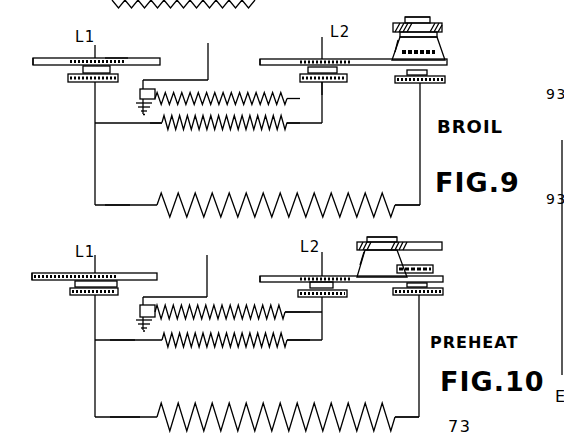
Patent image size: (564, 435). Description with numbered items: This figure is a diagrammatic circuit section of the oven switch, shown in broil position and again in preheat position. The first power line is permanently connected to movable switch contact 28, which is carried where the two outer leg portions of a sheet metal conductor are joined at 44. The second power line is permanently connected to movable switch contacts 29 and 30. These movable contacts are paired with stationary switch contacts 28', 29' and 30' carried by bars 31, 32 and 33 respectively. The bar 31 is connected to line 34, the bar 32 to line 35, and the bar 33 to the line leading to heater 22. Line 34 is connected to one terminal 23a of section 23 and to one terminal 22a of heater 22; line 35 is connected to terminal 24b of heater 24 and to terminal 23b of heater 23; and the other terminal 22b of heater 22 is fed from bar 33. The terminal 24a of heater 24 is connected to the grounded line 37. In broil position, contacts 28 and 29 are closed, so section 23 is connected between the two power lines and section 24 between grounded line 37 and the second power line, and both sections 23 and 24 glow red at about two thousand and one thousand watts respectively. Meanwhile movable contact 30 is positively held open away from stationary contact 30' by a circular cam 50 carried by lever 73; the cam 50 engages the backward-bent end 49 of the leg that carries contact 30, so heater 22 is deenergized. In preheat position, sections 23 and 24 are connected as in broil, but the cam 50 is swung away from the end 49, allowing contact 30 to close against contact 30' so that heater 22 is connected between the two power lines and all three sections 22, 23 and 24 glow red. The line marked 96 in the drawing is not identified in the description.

In FIG. 9, the heater 22 is at (262, 193).
In FIG. 10, the heater 22 is at (270, 405).
In FIG. 9, the terminal of heater 22 22a is at (117, 205).
In FIG. 10, the terminal of heater 22 22a is at (125, 417).
In FIG. 9, the terminal of heater 22 22b is at (407, 205).
In FIG. 10, the terminal of heater 22 22b is at (403, 417).
In FIG. 9, the heater section 23 is at (227, 131).
In FIG. 10, the heater section 23 is at (227, 346).
In FIG. 9, the terminal of section 23 23a is at (155, 128).
In FIG. 10, the terminal of section 23 23a is at (122, 341).
In FIG. 9, the terminal of heater 23 23b is at (307, 130).
In FIG. 10, the terminal of heater 23 23b is at (302, 343).
In FIG. 10, the heater section 24 is at (224, 305).
In FIG. 9, the terminal of heater 24 24a is at (127, 97).
In FIG. 10, the terminal of heater 24 24a is at (127, 314).
In FIG. 9, the terminal of heater 24 24b is at (231, 107).
In FIG. 10, the terminal of heater 24 24b is at (302, 315).
In FIG. 9, the movable switch contact 28 is at (114, 65).
In FIG. 10, the movable switch contact 28 is at (94, 268).
In FIG. 9, the stationary switch contact 28' is at (41, 72).
In FIG. 10, the stationary switch contact 28' is at (46, 289).
In FIG. 9, the movable switch contact 29 is at (353, 71).
In FIG. 10, the movable switch contact 29 is at (351, 268).
In FIG. 9, the stationary switch contact 29' is at (281, 71).
In FIG. 10, the stationary switch contact 29' is at (280, 288).
In FIG. 9, the movable switch contact 30 is at (436, 38).
In FIG. 10, the movable switch contact 30 is at (421, 271).
In FIG. 9, the stationary switch contact 30' is at (449, 73).
In FIG. 9, the bar 31 is at (80, 83).
In FIG. 10, the bar 31 is at (80, 298).
In FIG. 9, the bar 32 is at (327, 82).
In FIG. 10, the bar 32 is at (383, 288).
In FIG. 9, the bar 33 is at (410, 84).
In FIG. 10, the bar 33 is at (423, 296).
In FIG. 9, the line 34 is at (93, 108).
In FIG. 9, the line 35 is at (328, 84).
In FIG. 9, the grounded line 37 is at (208, 52).
In FIG. 10, the grounded line 37 is at (208, 268).
In FIG. 9, the junction of outer leg portions 44 is at (115, 60).
In FIG. 10, the end of fourth leg 49 is at (433, 272).
In FIG. 9, the circular cam 50 is at (397, 45).
In FIG. 10, the circular cam 50 is at (385, 263).
In FIG. 9, the lever 73 is at (442, 27).
In FIG. 10, the lever 73 is at (423, 243).
In FIG. 9, the conductor 96 is at (422, 97).